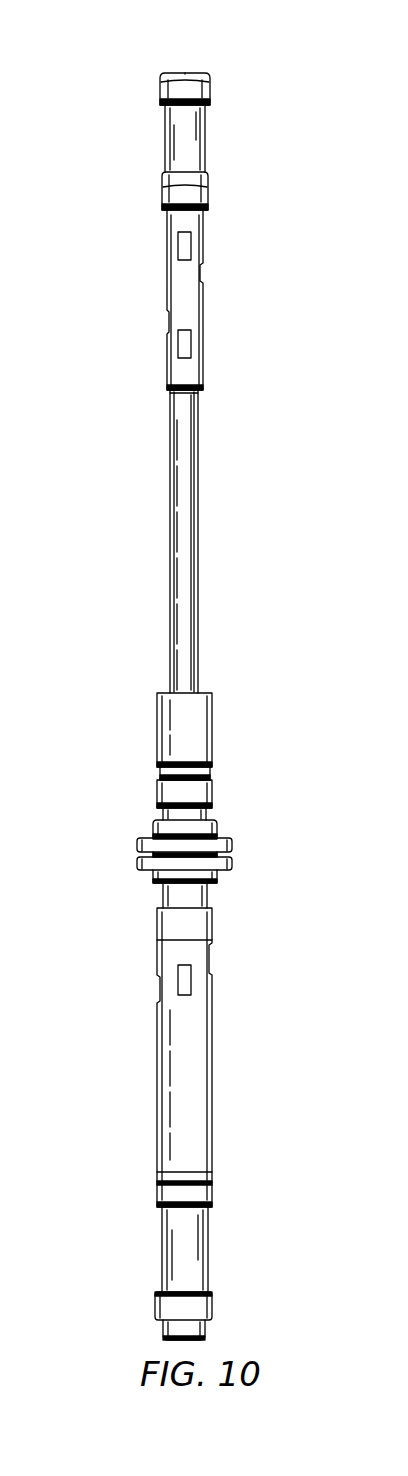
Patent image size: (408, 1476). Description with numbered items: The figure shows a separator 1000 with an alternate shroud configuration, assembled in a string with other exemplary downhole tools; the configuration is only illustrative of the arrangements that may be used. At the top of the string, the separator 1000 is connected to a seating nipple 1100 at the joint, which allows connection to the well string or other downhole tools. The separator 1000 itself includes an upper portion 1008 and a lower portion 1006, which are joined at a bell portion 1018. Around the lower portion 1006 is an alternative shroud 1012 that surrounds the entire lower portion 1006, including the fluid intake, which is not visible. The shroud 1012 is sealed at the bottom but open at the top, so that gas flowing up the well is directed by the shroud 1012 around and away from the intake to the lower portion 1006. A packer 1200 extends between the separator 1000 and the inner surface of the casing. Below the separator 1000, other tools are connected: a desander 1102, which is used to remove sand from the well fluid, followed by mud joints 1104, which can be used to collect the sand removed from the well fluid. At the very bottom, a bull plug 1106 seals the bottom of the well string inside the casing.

The separator 1000 is at (140, 31).
The seating nipple 1100 is at (205, 130).
The upper portion 1008 is at (204, 300).
The bell portion 1018 is at (198, 392).
The lower portion 1006 is at (199, 525).
The shroud 1012 is at (213, 731).
The packer 1200 is at (232, 841).
The desander 1102 is at (213, 1068).
The mud joints 1104 is at (209, 1245).
The bull plug 1106 is at (206, 1327).